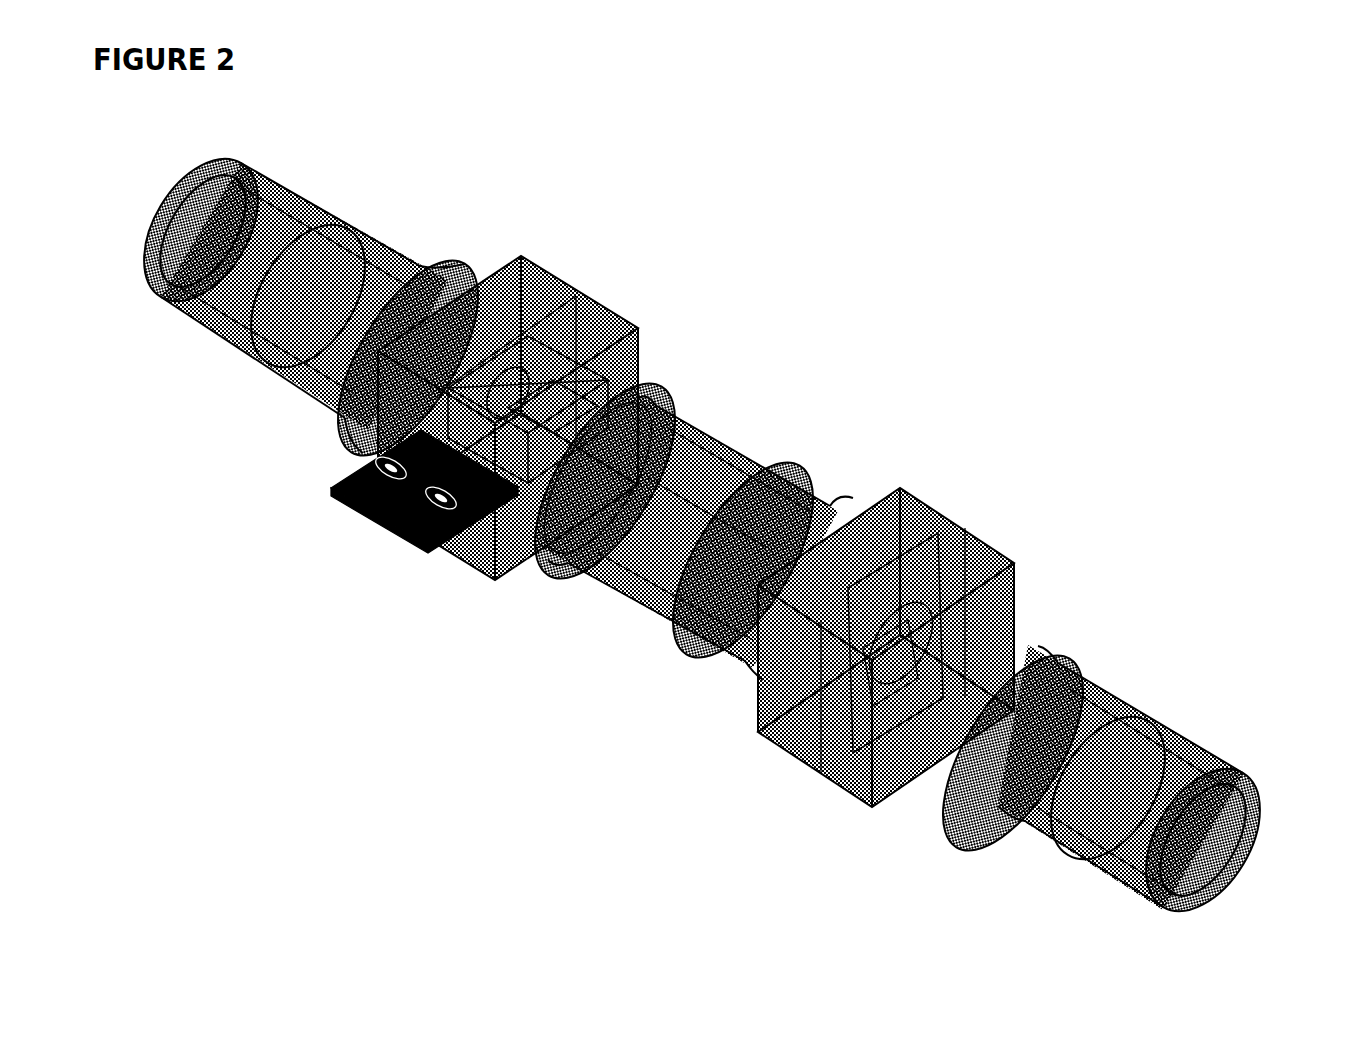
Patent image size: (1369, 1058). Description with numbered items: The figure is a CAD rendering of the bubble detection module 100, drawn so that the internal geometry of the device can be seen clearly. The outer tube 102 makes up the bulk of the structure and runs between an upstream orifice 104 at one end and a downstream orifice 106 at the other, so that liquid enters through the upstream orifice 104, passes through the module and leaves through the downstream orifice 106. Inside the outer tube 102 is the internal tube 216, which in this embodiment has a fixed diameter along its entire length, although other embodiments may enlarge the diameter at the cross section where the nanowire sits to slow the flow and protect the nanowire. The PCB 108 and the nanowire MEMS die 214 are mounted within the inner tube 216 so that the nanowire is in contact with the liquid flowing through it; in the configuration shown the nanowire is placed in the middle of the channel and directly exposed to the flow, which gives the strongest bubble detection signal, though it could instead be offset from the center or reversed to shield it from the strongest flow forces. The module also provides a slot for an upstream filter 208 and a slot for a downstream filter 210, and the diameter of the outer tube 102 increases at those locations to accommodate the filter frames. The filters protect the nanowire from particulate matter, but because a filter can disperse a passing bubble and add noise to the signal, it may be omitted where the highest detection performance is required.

The bubble detection module 100 is at (702, 516).
The outer tube 102 is at (767, 470).
The upstream orifice 104 is at (1243, 837).
The downstream orifice 106 is at (157, 193).
The PCB 108 is at (407, 540).
The upstream filter 208 is at (962, 598).
The downstream filter 210 is at (497, 343).
The nanowire MEMS die 214 is at (560, 548).
The internal tube 216 is at (660, 583).